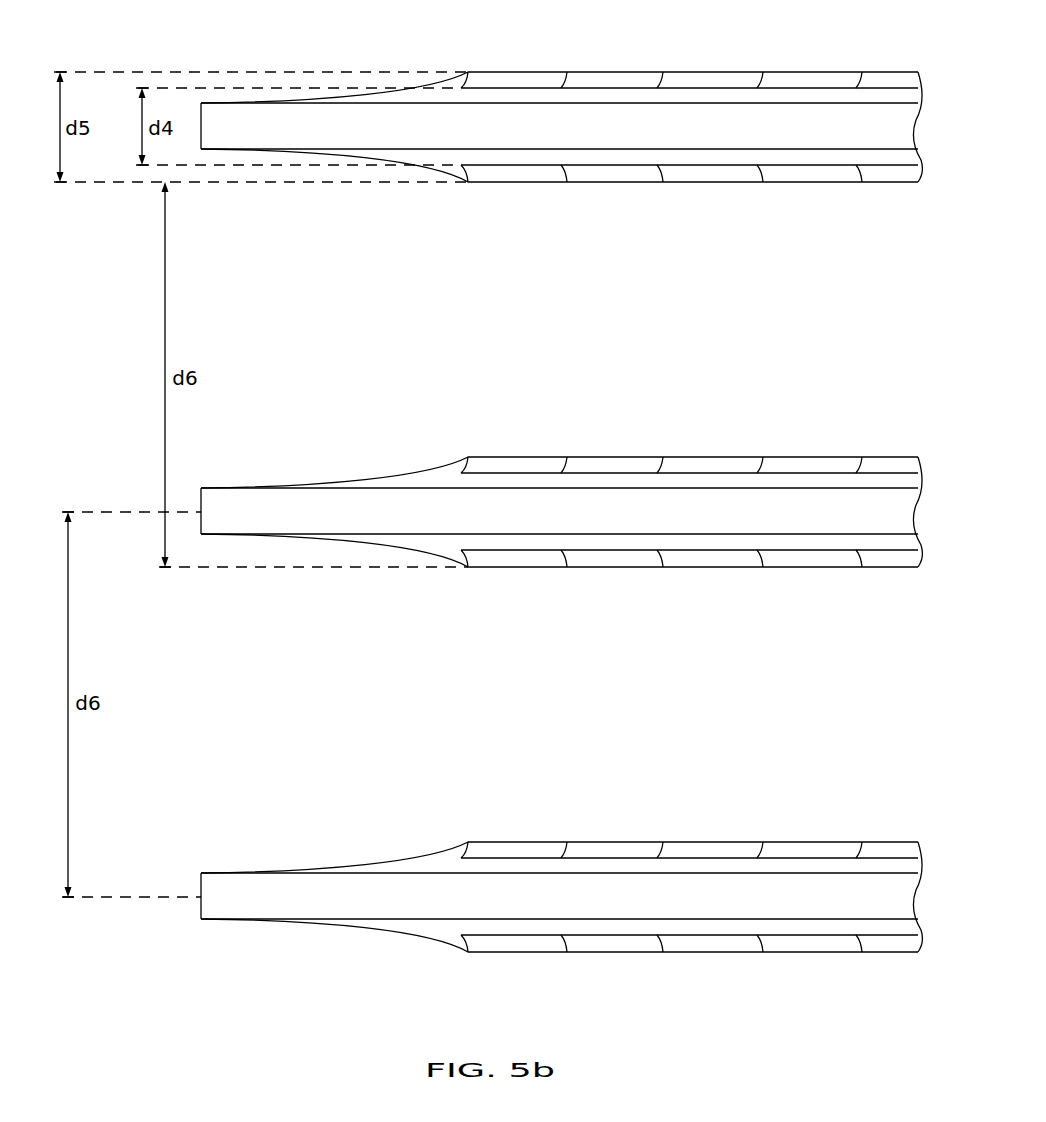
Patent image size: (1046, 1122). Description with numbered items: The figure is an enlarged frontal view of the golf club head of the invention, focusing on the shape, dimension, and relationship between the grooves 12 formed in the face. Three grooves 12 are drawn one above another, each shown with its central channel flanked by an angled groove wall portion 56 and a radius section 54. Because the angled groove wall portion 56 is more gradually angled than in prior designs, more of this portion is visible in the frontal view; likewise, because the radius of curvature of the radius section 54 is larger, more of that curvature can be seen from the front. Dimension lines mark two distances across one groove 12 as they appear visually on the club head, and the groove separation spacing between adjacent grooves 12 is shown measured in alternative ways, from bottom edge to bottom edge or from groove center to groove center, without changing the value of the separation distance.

The groove 12 is at (657, 127).
The radius section 54 is at (795, 72).
The angled groove wall portion 56 is at (711, 88).